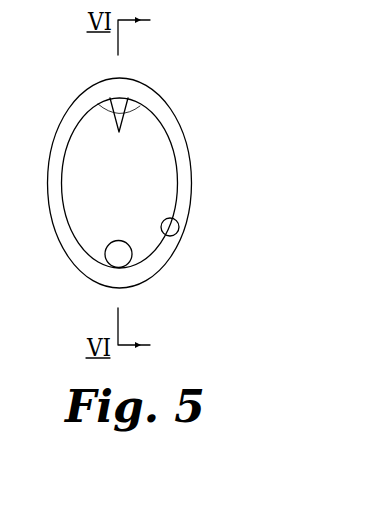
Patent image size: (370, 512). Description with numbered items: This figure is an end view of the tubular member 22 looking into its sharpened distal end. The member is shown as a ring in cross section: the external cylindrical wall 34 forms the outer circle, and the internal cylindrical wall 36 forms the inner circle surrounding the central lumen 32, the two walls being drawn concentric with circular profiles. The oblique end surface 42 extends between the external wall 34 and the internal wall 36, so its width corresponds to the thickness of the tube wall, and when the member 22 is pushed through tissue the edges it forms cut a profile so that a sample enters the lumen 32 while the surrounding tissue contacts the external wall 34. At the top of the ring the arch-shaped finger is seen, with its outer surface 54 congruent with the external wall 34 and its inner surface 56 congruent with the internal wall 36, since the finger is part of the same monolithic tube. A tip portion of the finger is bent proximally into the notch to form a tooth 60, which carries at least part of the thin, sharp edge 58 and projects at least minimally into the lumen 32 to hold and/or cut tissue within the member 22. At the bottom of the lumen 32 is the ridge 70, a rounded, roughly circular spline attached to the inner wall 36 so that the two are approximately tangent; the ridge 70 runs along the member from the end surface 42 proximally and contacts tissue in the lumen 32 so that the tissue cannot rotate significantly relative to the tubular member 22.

The tubular member 22 is at (174, 64).
The lumen 32 is at (107, 181).
The external cylindrical wall 34 is at (191, 192).
The internal cylindrical wall 36 is at (172, 236).
The end surface 42 is at (178, 137).
The outer surface of finger 54 is at (132, 78).
The inner surface of finger 56 is at (131, 115).
The edge of finger 58 is at (105, 112).
The tooth 60 is at (119, 103).
The ridge 70 is at (117, 254).